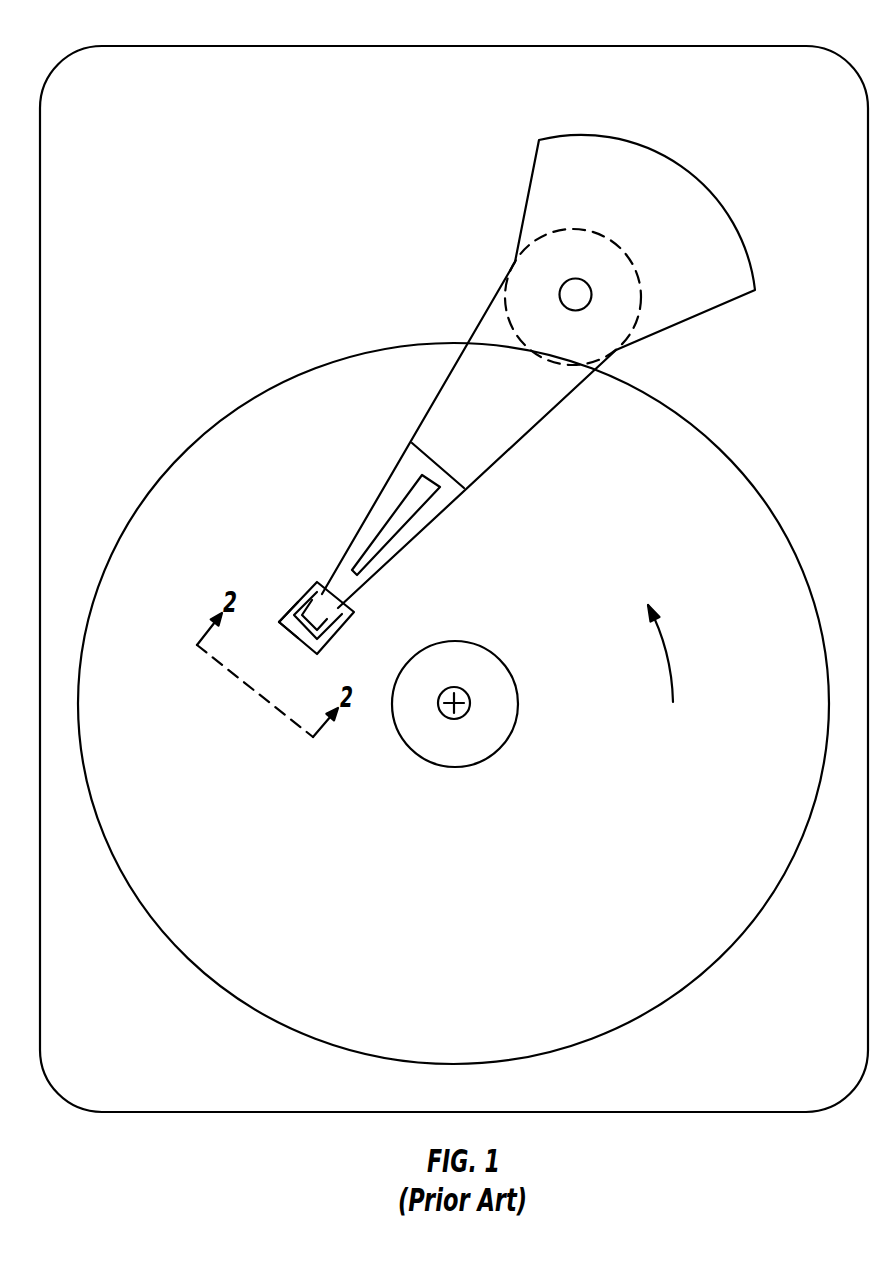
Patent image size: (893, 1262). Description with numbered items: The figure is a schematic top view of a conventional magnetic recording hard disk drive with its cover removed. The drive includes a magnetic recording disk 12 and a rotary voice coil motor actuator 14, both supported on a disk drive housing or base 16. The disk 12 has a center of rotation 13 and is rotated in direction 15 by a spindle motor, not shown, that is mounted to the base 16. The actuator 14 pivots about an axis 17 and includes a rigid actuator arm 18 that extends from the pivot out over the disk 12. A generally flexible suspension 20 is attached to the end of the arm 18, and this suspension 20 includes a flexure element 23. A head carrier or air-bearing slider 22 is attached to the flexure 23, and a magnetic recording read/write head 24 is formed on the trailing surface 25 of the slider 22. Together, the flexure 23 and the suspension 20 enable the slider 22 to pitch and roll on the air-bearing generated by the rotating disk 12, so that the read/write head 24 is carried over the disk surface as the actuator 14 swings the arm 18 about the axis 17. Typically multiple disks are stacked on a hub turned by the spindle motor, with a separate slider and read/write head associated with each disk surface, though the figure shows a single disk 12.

The magnetic recording disk 12 is at (465, 969).
The center of rotation 13 is at (470, 695).
The rotary voice coil motor actuator 14 is at (686, 165).
The direction of rotation 15 is at (673, 670).
The disk drive housing or base 16 is at (725, 46).
The pivot axis 17 is at (559, 292).
The rigid actuator arm 18 is at (447, 392).
The suspension 20 is at (398, 480).
The air-bearing slider 22 is at (306, 594).
The flexure element 23 is at (330, 620).
The magnetic recording read/write head 24 is at (308, 645).
The trailing surface 25 is at (290, 628).